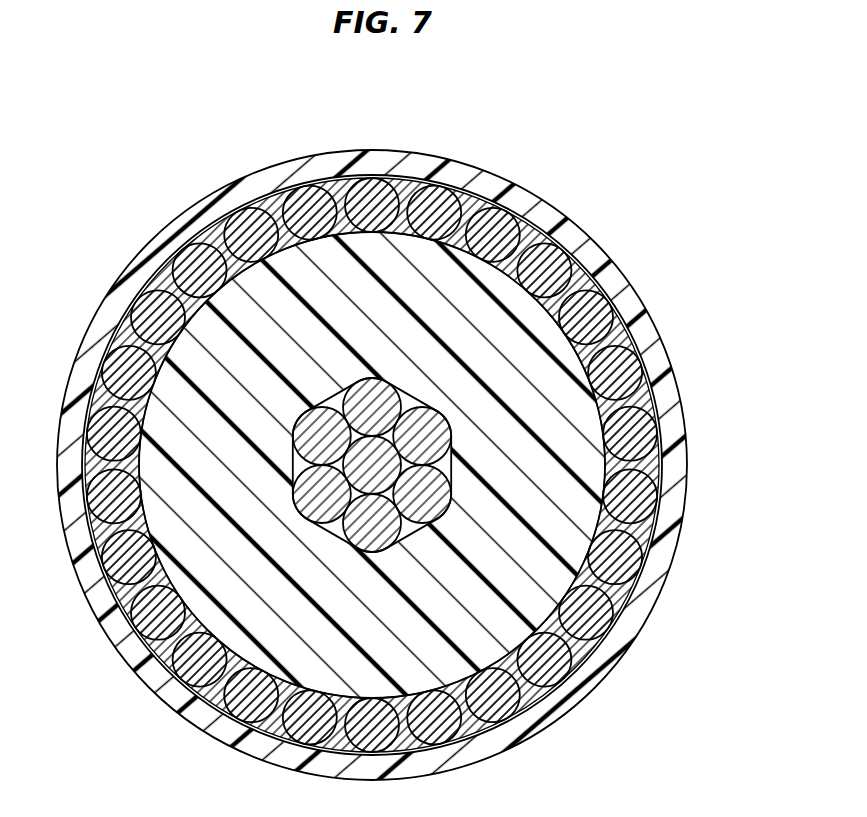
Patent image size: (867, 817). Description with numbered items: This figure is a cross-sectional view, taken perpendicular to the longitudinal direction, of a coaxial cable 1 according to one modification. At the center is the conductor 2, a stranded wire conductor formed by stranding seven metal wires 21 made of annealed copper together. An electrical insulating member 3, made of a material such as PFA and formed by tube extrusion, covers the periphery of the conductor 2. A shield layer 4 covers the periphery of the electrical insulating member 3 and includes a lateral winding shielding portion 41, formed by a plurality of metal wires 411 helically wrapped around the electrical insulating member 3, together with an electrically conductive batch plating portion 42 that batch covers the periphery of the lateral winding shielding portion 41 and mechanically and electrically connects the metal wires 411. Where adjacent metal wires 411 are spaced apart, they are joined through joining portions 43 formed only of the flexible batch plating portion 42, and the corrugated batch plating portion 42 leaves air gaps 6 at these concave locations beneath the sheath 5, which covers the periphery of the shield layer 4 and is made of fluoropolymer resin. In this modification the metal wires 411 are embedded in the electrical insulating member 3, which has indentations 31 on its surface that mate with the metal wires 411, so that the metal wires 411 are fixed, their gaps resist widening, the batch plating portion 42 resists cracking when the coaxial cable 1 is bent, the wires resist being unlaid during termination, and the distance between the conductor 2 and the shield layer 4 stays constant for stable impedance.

The coaxial cable 1 is at (160, 185).
The conductor 2 is at (410, 378).
The metal wire 21 is at (445, 420).
The electrical insulating member 3 is at (510, 390).
The indentation 31 is at (373, 227).
The shield layer 4 is at (736, 295).
The lateral winding shielding portion 41 is at (638, 352).
The metal wire 411 is at (635, 432).
The batch plating portion 42 is at (648, 390).
The joining portion 43 is at (657, 467).
The sheath 5 is at (675, 478).
The air gap 6 is at (652, 538).